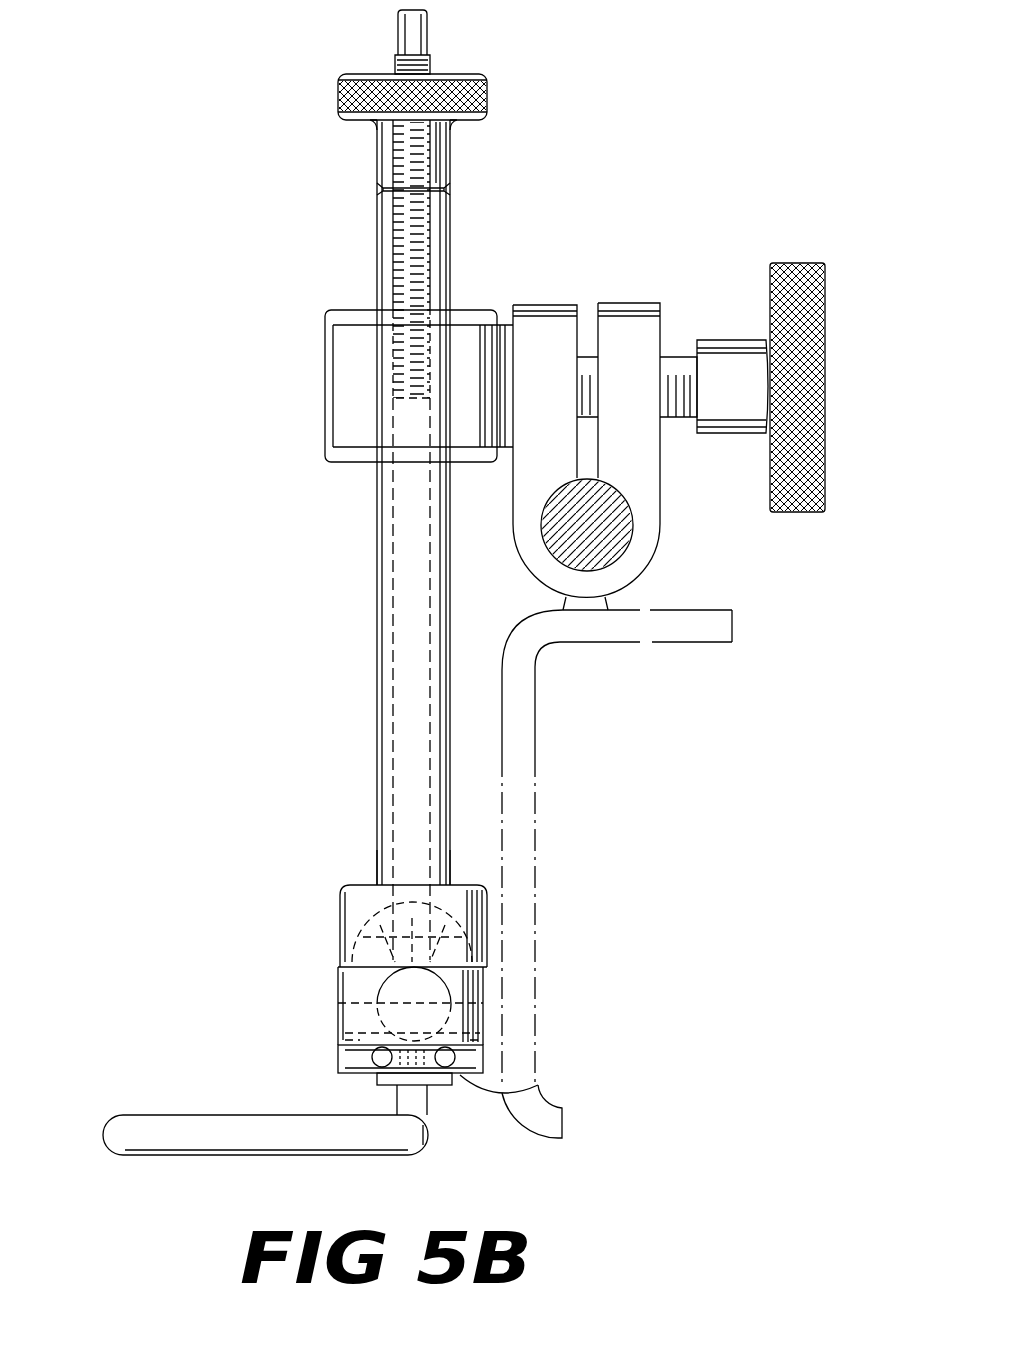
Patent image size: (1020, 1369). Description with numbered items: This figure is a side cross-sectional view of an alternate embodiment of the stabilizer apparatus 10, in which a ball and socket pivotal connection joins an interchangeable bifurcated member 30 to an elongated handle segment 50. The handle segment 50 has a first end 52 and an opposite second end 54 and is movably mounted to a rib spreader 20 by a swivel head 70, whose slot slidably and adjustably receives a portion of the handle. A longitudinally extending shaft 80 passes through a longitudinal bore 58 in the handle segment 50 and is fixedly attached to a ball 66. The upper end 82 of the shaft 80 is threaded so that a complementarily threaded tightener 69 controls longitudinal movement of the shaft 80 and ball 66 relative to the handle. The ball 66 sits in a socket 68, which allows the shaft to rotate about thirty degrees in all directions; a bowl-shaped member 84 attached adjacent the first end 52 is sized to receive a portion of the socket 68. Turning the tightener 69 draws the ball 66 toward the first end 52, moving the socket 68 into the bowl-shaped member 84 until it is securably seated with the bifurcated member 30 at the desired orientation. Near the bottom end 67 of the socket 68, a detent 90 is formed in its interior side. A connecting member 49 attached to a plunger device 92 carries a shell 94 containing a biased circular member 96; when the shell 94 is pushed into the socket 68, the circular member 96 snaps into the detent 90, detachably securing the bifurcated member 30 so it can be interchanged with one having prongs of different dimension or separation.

The apparatus 10 is at (212, 184).
The rib spreader 20 is at (672, 643).
The bifurcated member 30 is at (230, 1155).
The connecting member 49 is at (432, 1112).
The handle segment 50 is at (452, 273).
The first end 52 is at (380, 885).
The second end 54 is at (378, 190).
The longitudinal bore 58 is at (400, 282).
The ball 66 is at (390, 997).
The bottom end 67 is at (370, 1058).
The socket 68 is at (487, 995).
The tightener 69 is at (488, 100).
The swivel head 70 is at (655, 304).
The shaft 80 is at (400, 700).
The upper end 82 is at (400, 52).
The bowl-shaped member 84 is at (340, 920).
The detent 90 is at (472, 1052).
The plunger device 92 is at (375, 1075).
The shell 94 is at (362, 1040).
The circular member 96 is at (540, 1085).